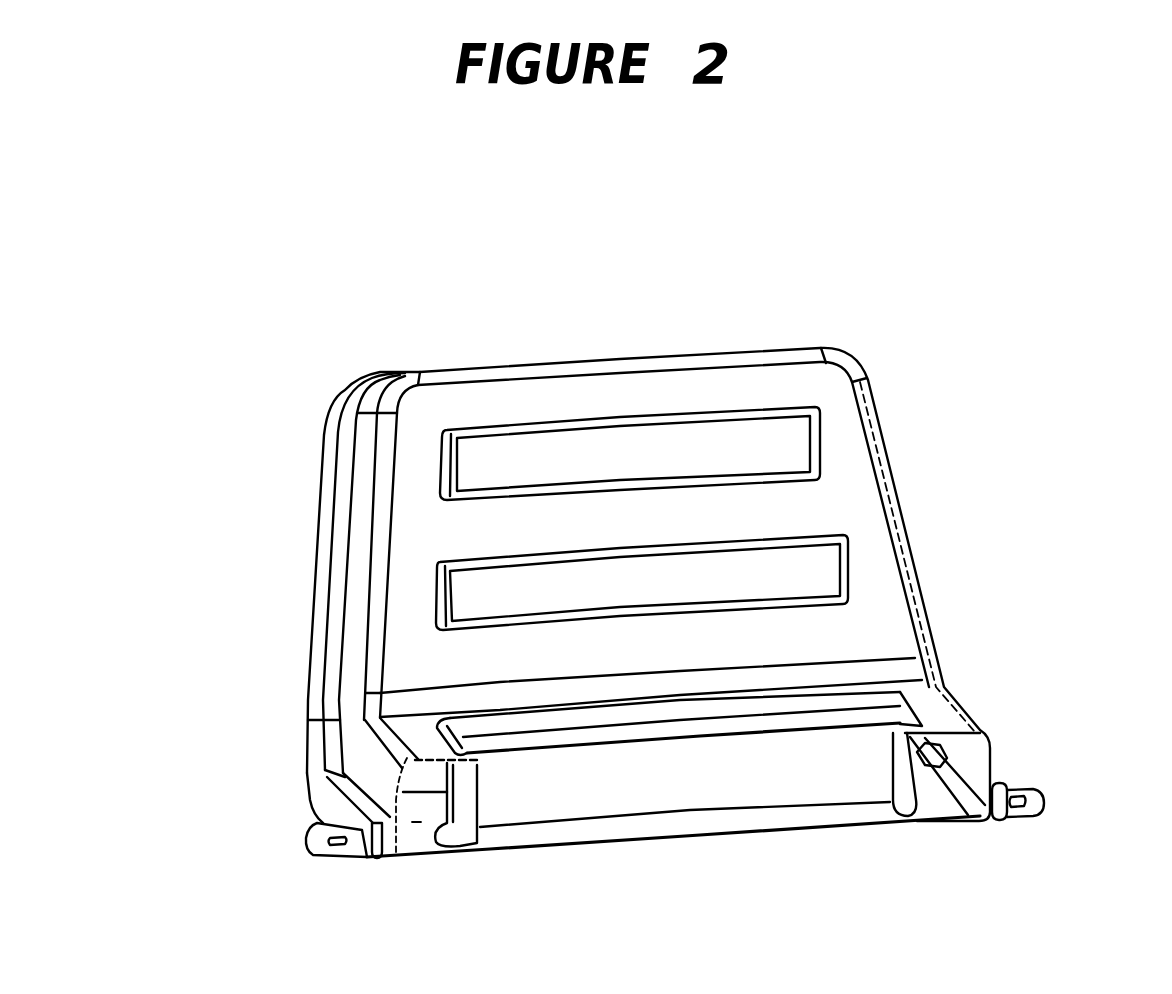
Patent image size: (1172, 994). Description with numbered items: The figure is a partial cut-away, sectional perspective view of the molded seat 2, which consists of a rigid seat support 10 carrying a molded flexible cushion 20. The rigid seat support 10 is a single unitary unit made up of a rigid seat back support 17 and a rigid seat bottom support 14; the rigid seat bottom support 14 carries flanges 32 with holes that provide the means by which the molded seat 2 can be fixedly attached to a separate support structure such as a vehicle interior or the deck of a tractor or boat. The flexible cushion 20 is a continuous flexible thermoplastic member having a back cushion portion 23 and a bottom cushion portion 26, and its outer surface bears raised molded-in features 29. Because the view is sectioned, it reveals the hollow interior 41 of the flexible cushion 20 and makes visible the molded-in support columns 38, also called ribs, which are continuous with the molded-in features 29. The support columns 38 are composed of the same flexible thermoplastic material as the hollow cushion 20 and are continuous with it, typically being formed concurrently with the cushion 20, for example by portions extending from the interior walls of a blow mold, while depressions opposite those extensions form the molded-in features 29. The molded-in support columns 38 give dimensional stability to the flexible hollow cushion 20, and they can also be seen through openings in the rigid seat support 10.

The molded seat 2 is at (1076, 367).
The rigid seat support 10 is at (292, 757).
The rigid seat bottom support 14 is at (1000, 774).
The rigid seat back support 17 is at (318, 588).
The molded flexible cushion 20 is at (950, 683).
The back cushion portion 23 is at (853, 484).
The bottom cushion portion 26 is at (950, 717).
The molded-in features 29 is at (513, 450).
The flanges 32 is at (1043, 793).
The molded-in support columns 38 is at (767, 785).
The hollow interior 41 is at (419, 812).